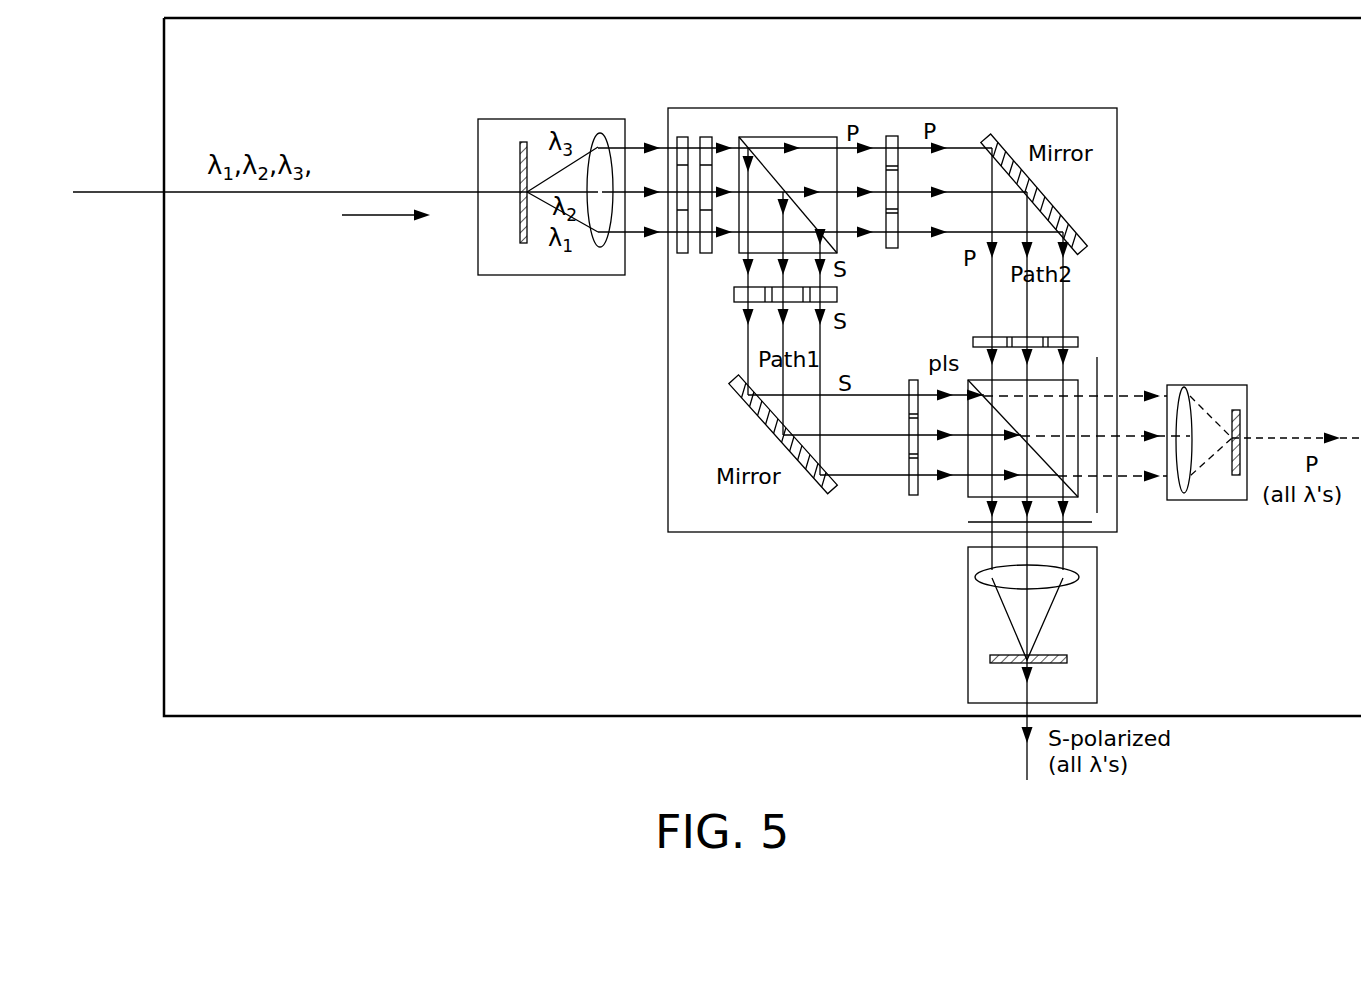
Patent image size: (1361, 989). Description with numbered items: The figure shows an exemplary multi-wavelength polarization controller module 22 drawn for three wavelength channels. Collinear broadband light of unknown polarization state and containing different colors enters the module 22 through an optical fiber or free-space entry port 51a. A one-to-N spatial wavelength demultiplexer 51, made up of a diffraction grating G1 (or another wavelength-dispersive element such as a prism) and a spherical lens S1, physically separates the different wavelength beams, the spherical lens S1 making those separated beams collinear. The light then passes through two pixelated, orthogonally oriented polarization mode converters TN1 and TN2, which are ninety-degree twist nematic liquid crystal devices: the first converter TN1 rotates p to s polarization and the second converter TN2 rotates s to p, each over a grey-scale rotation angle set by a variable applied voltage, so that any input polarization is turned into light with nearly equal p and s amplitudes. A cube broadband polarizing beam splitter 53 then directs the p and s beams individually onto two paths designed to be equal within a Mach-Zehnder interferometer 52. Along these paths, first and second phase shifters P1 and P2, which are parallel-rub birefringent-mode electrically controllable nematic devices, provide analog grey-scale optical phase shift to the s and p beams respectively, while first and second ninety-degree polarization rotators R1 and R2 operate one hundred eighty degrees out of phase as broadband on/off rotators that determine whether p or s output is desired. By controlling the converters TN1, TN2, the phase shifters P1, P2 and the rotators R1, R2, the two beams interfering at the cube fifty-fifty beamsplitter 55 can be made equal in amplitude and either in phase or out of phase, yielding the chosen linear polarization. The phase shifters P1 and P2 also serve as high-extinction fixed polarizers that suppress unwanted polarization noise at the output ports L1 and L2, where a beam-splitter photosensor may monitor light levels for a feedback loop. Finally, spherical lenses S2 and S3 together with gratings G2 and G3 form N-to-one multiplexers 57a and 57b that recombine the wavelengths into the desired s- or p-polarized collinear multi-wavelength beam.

The multi-wavelength polarization controller module 22 is at (163, 142).
The spatial wavelength demultiplexer 51 is at (502, 105).
The entry port 51a is at (290, 193).
The diffraction grating G1 is at (524, 258).
The spherical lens S1 is at (598, 142).
The Mach-Zehnder interferometer 52 is at (1034, 98).
The first polarization mode converter TN1 is at (682, 270).
The second polarization mode converter TN2 is at (706, 270).
The cube broadband polarizing beam splitter 53 is at (767, 122).
The first phase shifter P1 is at (850, 295).
The second phase shifter P2 is at (899, 118).
The first 90° polarization rotator R1 is at (906, 366).
The second 90° polarization rotator R2 is at (962, 328).
The cube 50:50 beamsplitter 55 is at (1082, 355).
The module output port L1 is at (1145, 370).
The module output port L2 is at (1092, 540).
The spherical lens S2 is at (977, 573).
The spherical lens S3 is at (1187, 397).
The grating G2 is at (990, 662).
The grating G3 is at (1235, 476).
The N:1 multiplexer 57a is at (1097, 640).
The N:1 multiplexer 57b is at (1198, 500).